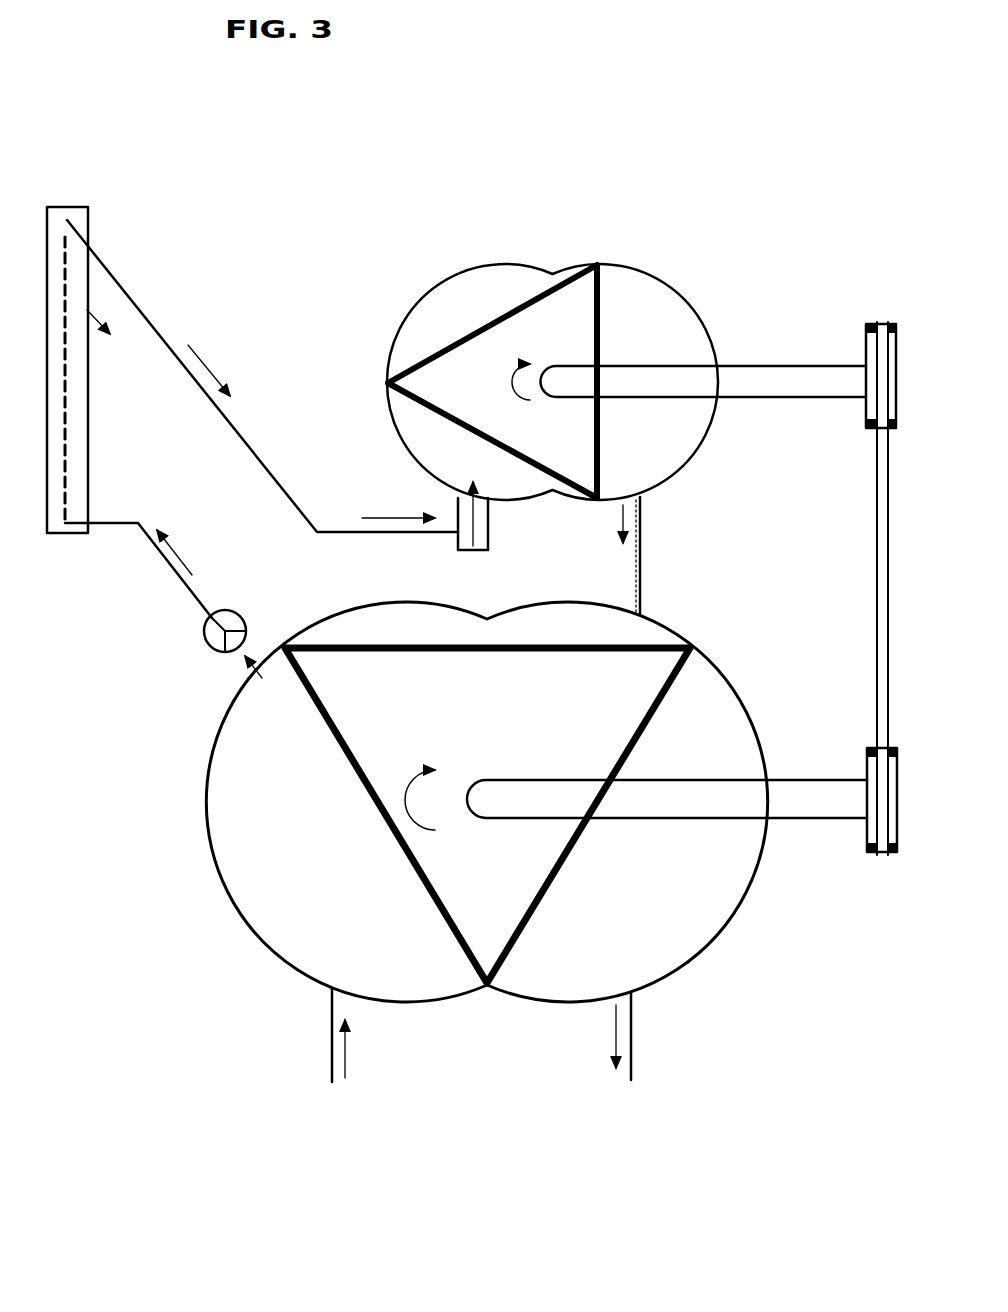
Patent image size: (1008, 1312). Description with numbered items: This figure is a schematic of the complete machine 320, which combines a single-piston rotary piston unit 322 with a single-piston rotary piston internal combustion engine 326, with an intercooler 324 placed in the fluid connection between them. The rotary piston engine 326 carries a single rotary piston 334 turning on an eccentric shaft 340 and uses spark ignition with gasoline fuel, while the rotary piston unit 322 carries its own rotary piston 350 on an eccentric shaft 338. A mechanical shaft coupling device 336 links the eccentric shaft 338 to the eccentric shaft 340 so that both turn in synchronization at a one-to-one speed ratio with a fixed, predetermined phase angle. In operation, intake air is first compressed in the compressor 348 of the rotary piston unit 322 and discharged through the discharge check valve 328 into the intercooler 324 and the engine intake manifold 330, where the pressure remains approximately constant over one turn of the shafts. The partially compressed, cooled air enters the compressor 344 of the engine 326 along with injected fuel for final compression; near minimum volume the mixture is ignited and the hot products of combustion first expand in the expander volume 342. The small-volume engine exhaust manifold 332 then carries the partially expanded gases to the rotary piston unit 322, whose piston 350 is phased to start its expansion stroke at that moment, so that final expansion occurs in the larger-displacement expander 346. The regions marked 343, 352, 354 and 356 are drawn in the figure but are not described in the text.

The machine 320 is at (744, 224).
The rotary piston unit 322 is at (738, 905).
The intercooler 324 is at (88, 455).
The rotary piston internal combustion engine 326 is at (690, 298).
The discharge check valve 328 is at (207, 625).
The engine intake manifold 330 is at (488, 532).
The engine exhaust manifold 332 is at (640, 532).
The rotary piston 334 is at (548, 315).
The mechanical shaft coupling device 336 is at (877, 528).
The eccentric shaft 338 is at (828, 780).
The eccentric shaft 340 is at (772, 365).
The expander volume 342 is at (675, 437).
The chamber 343 is at (440, 443).
The compressor volume 344 is at (440, 312).
The expander volume 346 is at (720, 706).
The compressor volume 348 is at (252, 716).
The rotary piston 350 is at (400, 773).
The chamber 352 is at (340, 617).
The inlet port 354 is at (640, 612).
The outlet port 356 is at (255, 672).